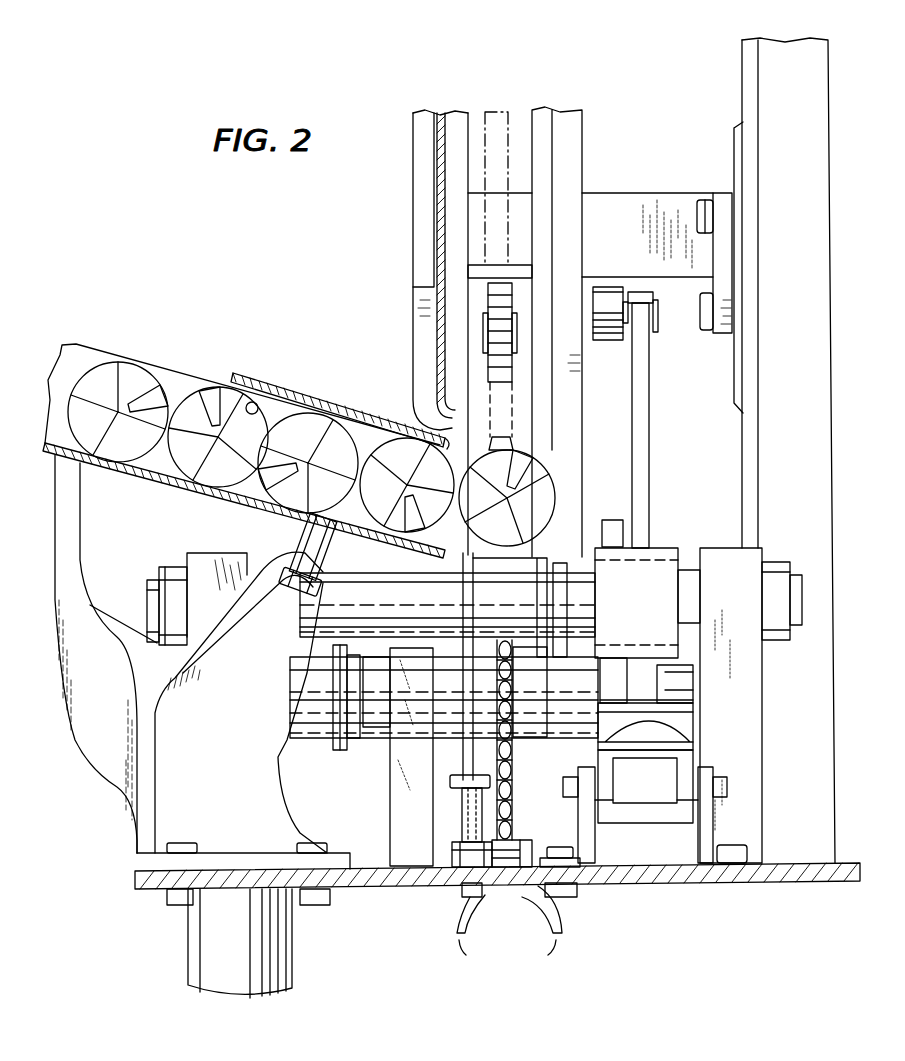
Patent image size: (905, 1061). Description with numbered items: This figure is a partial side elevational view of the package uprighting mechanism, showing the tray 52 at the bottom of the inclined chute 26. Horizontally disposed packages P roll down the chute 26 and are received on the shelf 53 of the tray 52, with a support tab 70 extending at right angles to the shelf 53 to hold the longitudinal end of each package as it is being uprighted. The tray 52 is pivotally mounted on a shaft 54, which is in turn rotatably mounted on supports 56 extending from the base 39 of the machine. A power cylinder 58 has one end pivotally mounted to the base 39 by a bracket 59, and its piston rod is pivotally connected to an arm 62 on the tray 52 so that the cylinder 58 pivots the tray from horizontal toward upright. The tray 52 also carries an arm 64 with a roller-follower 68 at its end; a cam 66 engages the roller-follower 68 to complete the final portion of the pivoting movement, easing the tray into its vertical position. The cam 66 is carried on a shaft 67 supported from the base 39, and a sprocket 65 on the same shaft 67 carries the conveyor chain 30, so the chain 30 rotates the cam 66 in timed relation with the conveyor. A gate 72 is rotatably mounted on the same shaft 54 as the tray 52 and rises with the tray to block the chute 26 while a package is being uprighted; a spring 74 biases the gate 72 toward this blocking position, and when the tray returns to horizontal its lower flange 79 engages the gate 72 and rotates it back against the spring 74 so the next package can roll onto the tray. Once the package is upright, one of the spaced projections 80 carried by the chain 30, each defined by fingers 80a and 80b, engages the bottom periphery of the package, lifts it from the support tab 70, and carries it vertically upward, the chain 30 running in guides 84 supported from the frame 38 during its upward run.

The frame 38 is at (796, 58).
The guides 84 is at (455, 120).
The conveyor chain 30 is at (478, 308).
The support tab 70 is at (515, 438).
The packages P is at (127, 380).
The inclined chute 26 is at (215, 368).
The supports 56 is at (226, 562).
The shaft 54 is at (146, 600).
The tray 52 is at (580, 513).
The shelf 53 is at (517, 560).
The lower flange 79 is at (470, 740).
The cam 66 is at (620, 528).
The arm 64 is at (645, 378).
The roller-follower 68 is at (608, 338).
The shaft 67 is at (450, 706).
The gate 72 is at (436, 804).
The sprocket 65 is at (508, 763).
The arm 62 is at (650, 684).
The power cylinder 58 is at (670, 730).
The bracket 59 is at (706, 818).
The spring 74 is at (452, 845).
The base 39 is at (367, 884).
The projections 80 is at (526, 910).
The finger 80a is at (462, 940).
The finger 80b is at (556, 940).